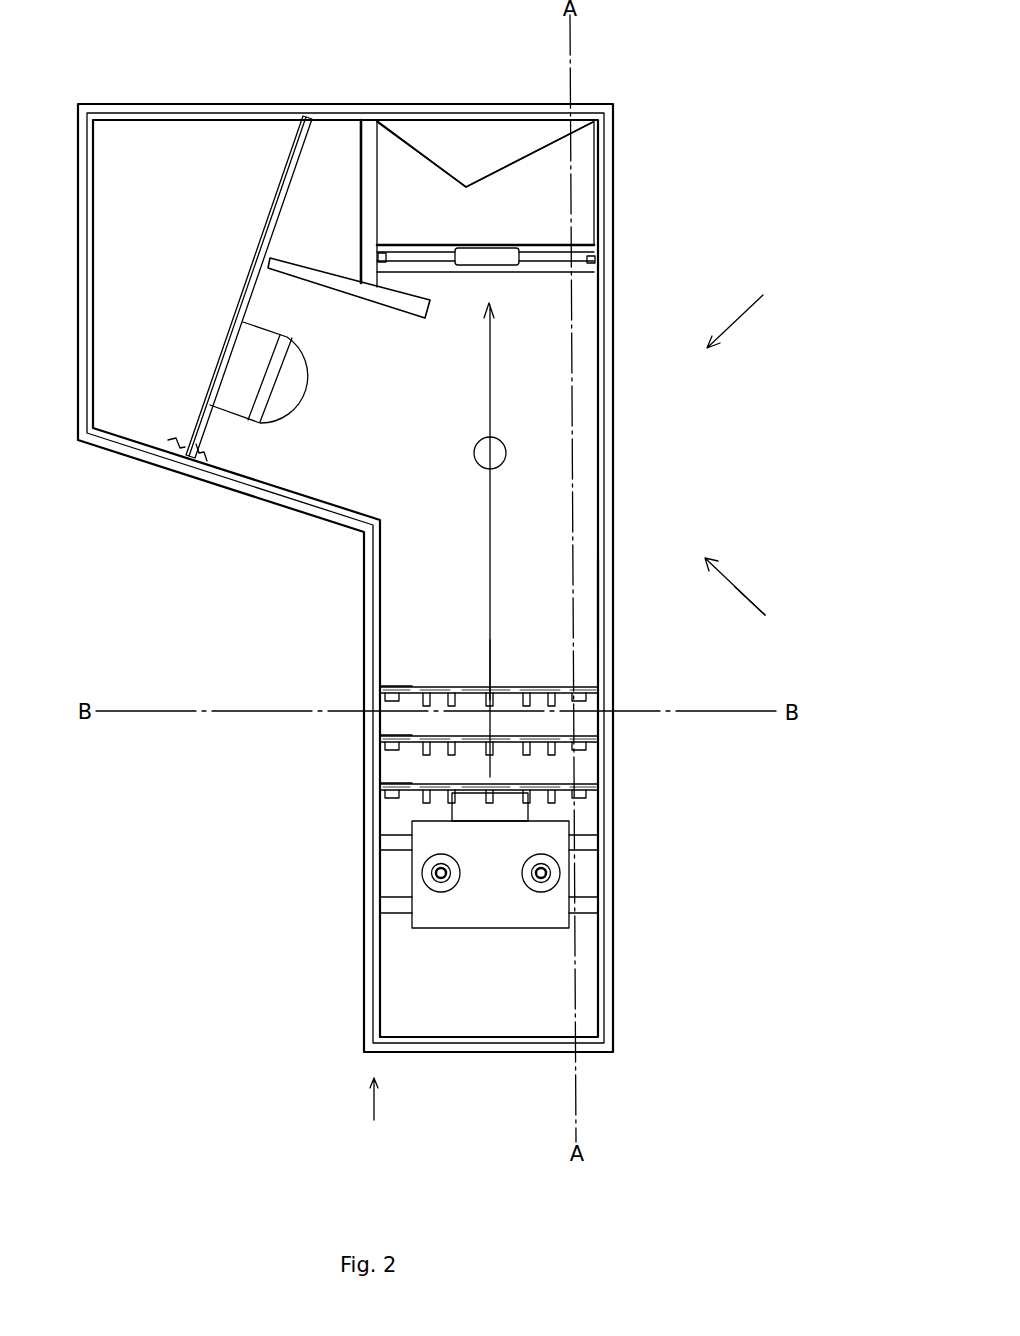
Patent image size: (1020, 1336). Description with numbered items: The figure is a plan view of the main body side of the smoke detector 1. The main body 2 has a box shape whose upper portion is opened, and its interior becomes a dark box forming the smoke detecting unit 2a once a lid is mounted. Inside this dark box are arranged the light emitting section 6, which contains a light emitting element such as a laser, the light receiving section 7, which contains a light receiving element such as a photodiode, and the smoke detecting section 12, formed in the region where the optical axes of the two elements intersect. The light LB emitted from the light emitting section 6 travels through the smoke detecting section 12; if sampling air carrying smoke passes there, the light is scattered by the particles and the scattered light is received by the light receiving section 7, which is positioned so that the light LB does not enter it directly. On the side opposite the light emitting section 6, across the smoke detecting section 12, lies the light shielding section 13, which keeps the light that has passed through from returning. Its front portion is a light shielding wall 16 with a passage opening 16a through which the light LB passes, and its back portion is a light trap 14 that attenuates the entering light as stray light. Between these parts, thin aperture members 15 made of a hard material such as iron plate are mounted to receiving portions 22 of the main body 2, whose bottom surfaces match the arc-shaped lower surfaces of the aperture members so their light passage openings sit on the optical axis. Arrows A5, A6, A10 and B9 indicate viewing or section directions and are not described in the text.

The smoke detector 1 is at (643, 60).
The main body 2 is at (616, 962).
The smoke detecting unit 2a is at (600, 597).
The light emitting section 6 is at (571, 860).
The light receiving section 7 is at (262, 425).
The smoke detecting section 12 is at (524, 462).
The light shielding section 13 is at (522, 197).
The light trap 14 is at (523, 160).
The aperture member 15 is at (566, 703).
The light shielding wall 16 is at (596, 258).
The passage opening 16a is at (527, 270).
The receiving portion 22 is at (405, 672).
The light LB is at (492, 640).
The direction arrow A5 is at (745, 313).
The direction arrow A6 is at (755, 603).
The direction arrow A10 is at (750, 601).
The direction arrow B9 is at (372, 1098).